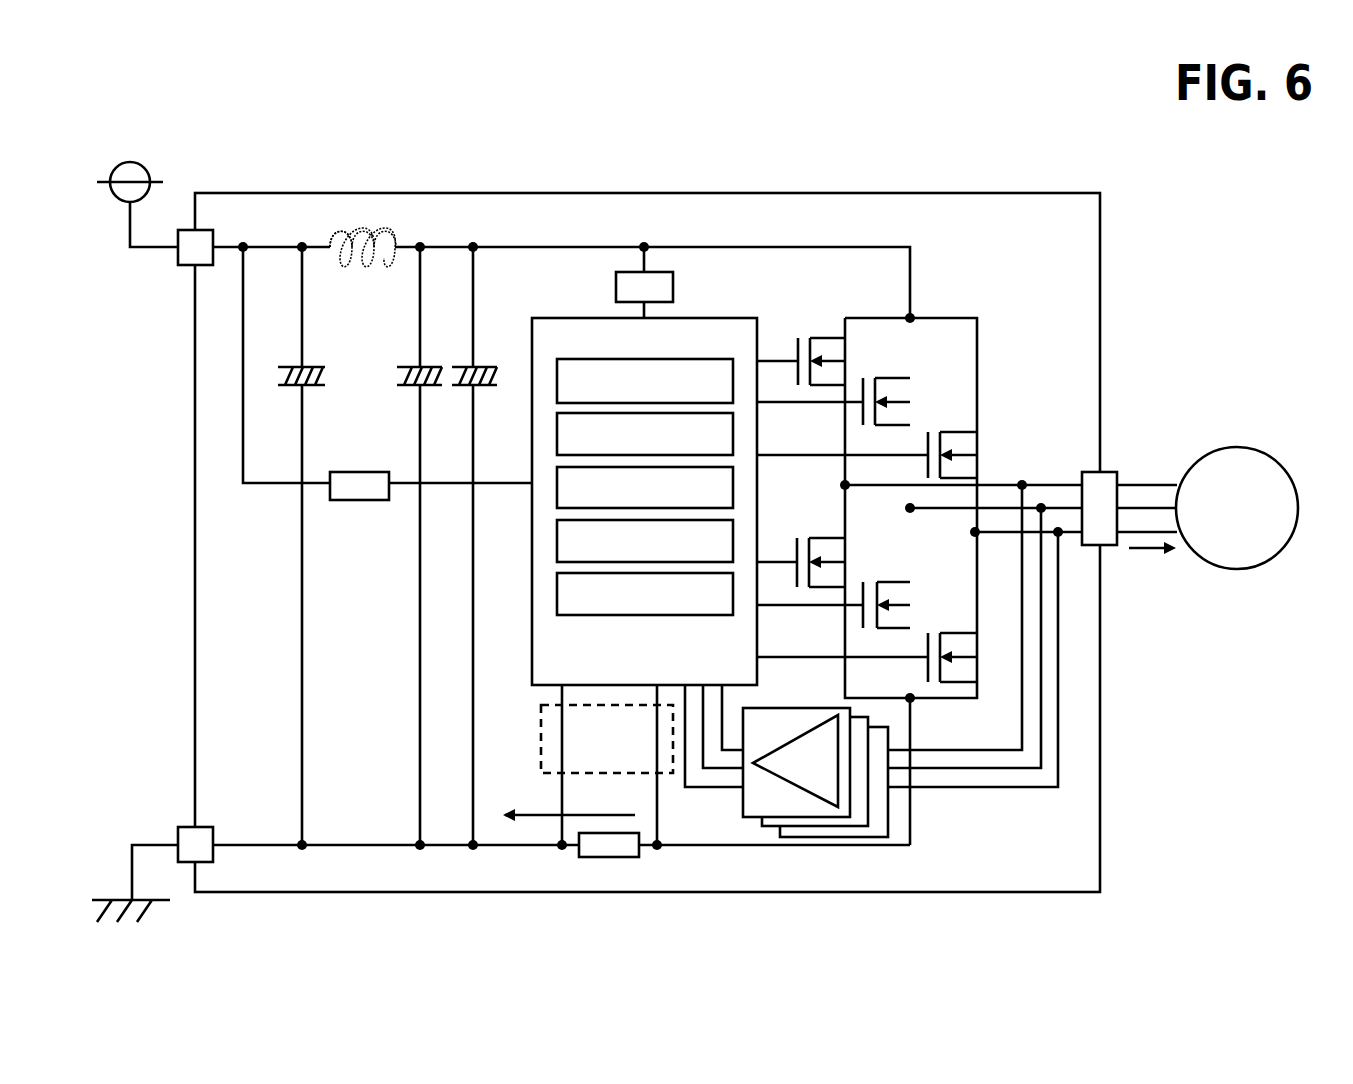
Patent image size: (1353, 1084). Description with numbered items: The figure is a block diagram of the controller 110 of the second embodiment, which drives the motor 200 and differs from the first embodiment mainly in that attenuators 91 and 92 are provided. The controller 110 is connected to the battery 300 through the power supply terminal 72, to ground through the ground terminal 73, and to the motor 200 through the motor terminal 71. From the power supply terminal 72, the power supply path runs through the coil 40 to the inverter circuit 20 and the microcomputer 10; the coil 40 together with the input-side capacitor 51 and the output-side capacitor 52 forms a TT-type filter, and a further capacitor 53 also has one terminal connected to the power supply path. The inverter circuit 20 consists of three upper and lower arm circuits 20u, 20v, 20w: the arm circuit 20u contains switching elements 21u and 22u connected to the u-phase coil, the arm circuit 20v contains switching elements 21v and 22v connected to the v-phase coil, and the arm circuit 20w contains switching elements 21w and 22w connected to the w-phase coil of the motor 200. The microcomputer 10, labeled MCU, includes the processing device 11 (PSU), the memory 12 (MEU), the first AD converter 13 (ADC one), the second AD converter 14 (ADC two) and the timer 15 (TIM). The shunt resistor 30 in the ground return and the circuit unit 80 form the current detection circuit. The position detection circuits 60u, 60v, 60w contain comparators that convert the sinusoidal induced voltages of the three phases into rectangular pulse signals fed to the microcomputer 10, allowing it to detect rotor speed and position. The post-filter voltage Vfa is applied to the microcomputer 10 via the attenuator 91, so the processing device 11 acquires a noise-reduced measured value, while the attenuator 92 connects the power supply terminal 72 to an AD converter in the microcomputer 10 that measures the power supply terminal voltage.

The microcomputer 10 is at (705, 318).
The processing device 11 is at (557, 378).
The memory 12 is at (557, 425).
The first AD converter 13 is at (557, 497).
The second AD converter 14 is at (557, 543).
The timer 15 is at (557, 595).
The inverter circuit 20 is at (1007, 128).
The upper and lower arm circuit 20u is at (823, 298).
The upper and lower arm circuit 20v is at (885, 335).
The upper and lower arm circuit 20w is at (946, 375).
The switching element 21u is at (827, 335).
The switching element 21v is at (897, 378).
The switching element 21w is at (962, 432).
The switching element 22u is at (827, 539).
The switching element 22v is at (895, 582).
The switching element 22w is at (962, 633).
The shunt resistor 30 is at (605, 857).
The coil 40 is at (382, 227).
The capacitor 51 is at (293, 387).
The capacitor 52 is at (403, 387).
The capacitor 53 is at (483, 385).
The position detection circuit 60u is at (748, 817).
The position detection circuit 60v is at (825, 828).
The position detection circuit 60w is at (877, 838).
The motor terminal 71 is at (1108, 547).
The power supply terminal 72 is at (183, 268).
The ground terminal 73 is at (187, 827).
The circuit unit 80 is at (665, 773).
The attenuator 91 is at (620, 270).
The attenuator 92 is at (353, 502).
The controller 110 is at (1077, 193).
The motor 200 is at (1238, 447).
The battery 300 is at (135, 165).